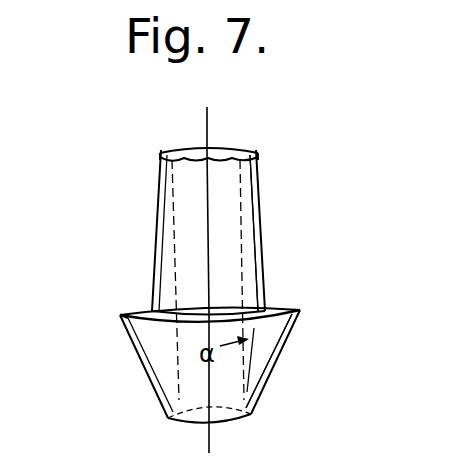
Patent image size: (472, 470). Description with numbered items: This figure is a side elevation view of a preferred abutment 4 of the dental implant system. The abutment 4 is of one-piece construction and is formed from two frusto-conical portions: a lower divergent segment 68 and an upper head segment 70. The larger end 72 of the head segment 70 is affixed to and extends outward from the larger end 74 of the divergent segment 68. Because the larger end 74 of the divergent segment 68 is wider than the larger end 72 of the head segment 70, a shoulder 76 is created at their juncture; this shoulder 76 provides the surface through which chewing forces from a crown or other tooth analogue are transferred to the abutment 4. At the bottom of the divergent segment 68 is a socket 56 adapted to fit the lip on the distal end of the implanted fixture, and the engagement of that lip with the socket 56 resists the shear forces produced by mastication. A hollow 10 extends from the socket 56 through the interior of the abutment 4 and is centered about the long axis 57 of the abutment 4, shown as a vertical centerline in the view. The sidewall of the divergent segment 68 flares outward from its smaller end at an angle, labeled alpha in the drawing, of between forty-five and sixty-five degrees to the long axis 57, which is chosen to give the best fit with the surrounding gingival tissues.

The abutment 4 is at (122, 192).
The hollow 10 is at (243, 230).
The long axis 57 is at (208, 133).
The head segment 70 is at (268, 271).
The larger end of the head segment 72 is at (272, 302).
The larger end of the divergent segment 74 is at (290, 334).
The shoulder 76 is at (140, 313).
The divergent segment 68 is at (276, 363).
The socket 56 is at (165, 407).